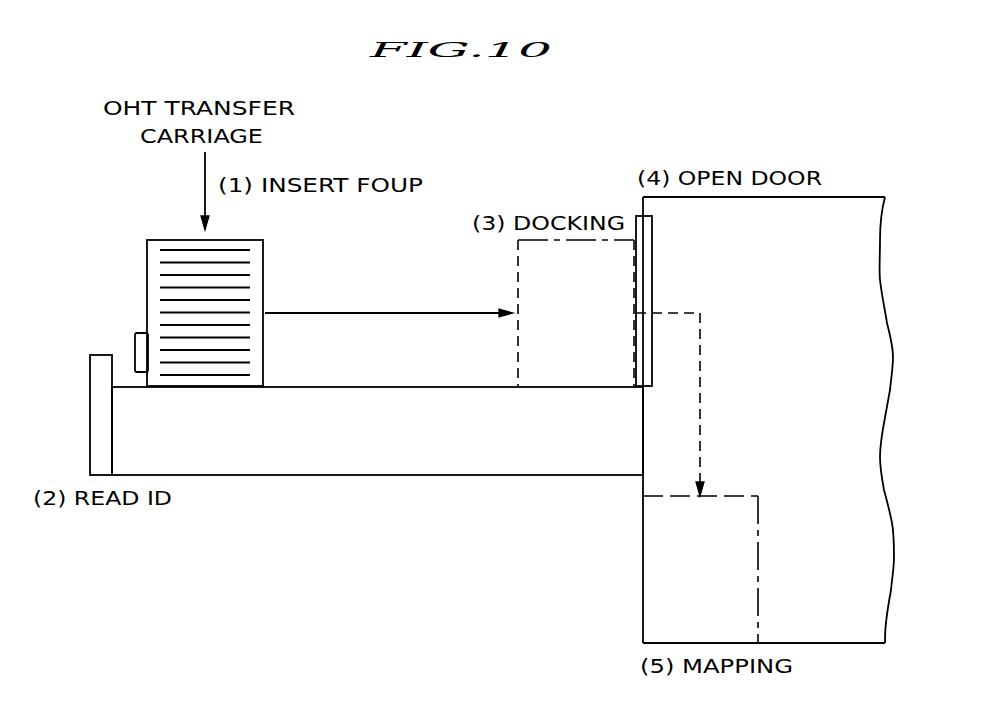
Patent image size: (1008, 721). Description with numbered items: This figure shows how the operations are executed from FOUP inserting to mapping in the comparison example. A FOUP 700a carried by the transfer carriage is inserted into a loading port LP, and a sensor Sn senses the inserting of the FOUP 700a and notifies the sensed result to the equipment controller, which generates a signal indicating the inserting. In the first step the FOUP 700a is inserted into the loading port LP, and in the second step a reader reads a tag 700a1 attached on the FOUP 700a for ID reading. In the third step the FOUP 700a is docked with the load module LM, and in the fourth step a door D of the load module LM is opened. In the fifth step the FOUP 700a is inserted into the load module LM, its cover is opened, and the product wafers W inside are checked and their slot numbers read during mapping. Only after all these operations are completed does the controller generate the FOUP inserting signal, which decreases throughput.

The FOUP 700a is at (518, 258).
The tag 700a1 is at (138, 343).
The product wafers W is at (240, 261).
The door D is at (653, 241).
The sensor Sn is at (101, 418).
The loading port LP is at (212, 392).
The load module LM is at (768, 420).